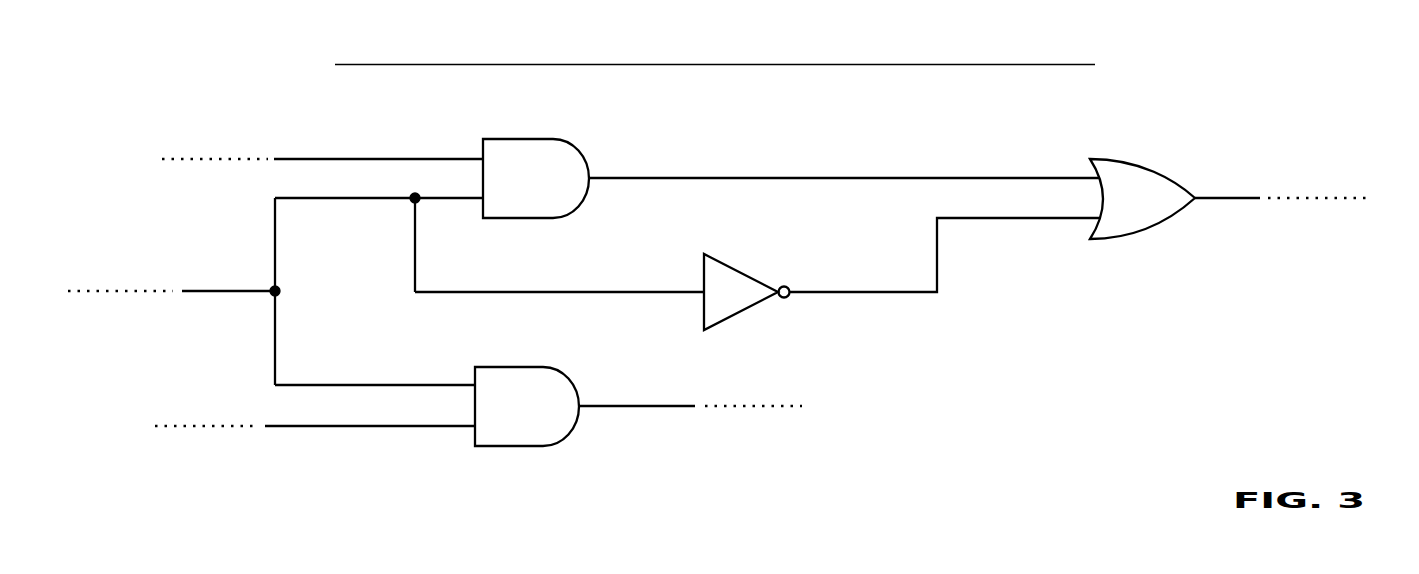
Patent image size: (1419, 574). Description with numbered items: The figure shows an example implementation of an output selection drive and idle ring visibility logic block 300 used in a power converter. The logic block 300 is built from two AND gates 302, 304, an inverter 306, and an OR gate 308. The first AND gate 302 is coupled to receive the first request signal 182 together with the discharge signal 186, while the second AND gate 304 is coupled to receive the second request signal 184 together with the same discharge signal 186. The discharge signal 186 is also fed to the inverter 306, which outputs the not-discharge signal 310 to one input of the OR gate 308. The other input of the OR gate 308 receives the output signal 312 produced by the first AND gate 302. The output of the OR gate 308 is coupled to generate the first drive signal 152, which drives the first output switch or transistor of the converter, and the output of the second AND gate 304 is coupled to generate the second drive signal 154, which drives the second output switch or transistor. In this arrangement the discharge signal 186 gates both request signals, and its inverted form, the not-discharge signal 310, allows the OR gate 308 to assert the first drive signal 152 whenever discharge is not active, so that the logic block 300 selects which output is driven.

The output selection drive and idle ring visibility logic block 300 is at (1403, 64).
The REQ_1 signal 182 is at (216, 119).
The REQ_2 signal 184 is at (208, 462).
The DISCHARGE signal 186 is at (104, 246).
The AND gate 302 is at (515, 128).
The AND gate 304 is at (520, 360).
The inverter 306 is at (758, 230).
The OR gate 308 is at (1098, 138).
The NOT_DISCHARGE signal 310 is at (893, 284).
The AND gate 302 output signal 312 is at (782, 169).
The DR_1 signal 152 is at (1237, 212).
The DR_2 signal 154 is at (655, 413).